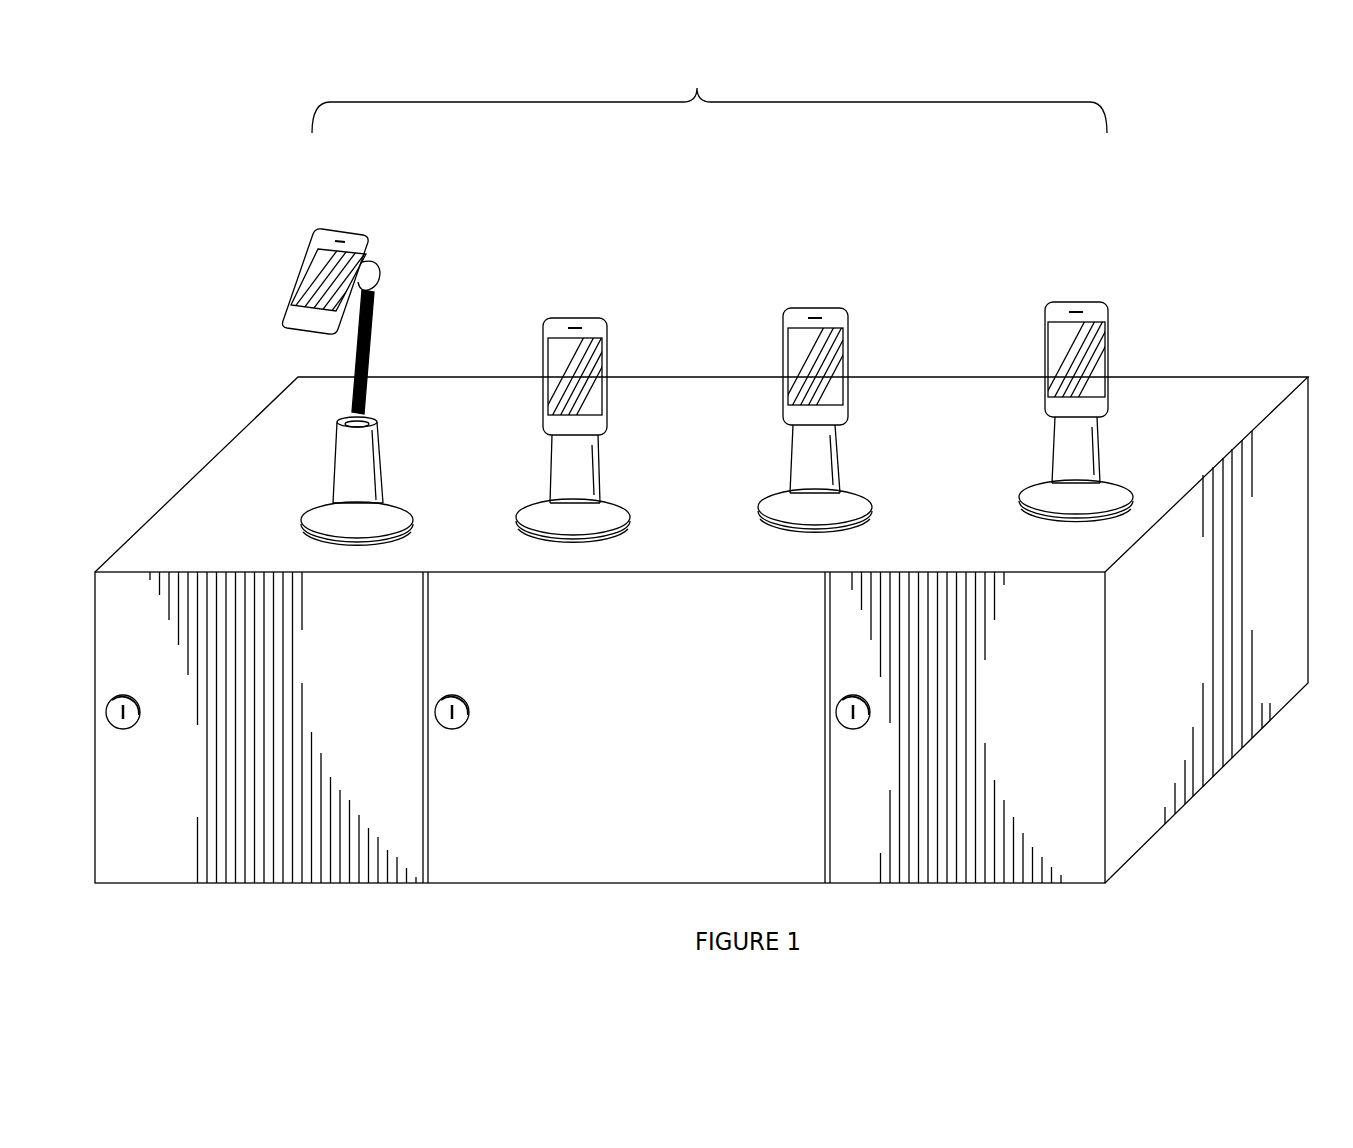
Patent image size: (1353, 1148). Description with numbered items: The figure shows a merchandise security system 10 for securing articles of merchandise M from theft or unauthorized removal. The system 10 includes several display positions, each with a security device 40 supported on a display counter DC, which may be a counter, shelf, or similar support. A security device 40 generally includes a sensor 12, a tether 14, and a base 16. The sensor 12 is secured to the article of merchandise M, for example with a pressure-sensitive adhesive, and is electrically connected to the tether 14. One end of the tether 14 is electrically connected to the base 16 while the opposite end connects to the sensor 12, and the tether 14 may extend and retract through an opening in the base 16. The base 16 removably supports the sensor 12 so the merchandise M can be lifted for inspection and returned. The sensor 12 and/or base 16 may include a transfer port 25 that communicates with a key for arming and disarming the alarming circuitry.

The merchandise security system 10 is at (709, 92).
The sensor 12 is at (373, 270).
The tether 14 is at (370, 363).
The base 16 is at (332, 488).
The transfer port 25 is at (578, 502).
The security device 40 is at (430, 537).
The article of merchandise M is at (305, 270).
The display counter DC is at (1221, 419).